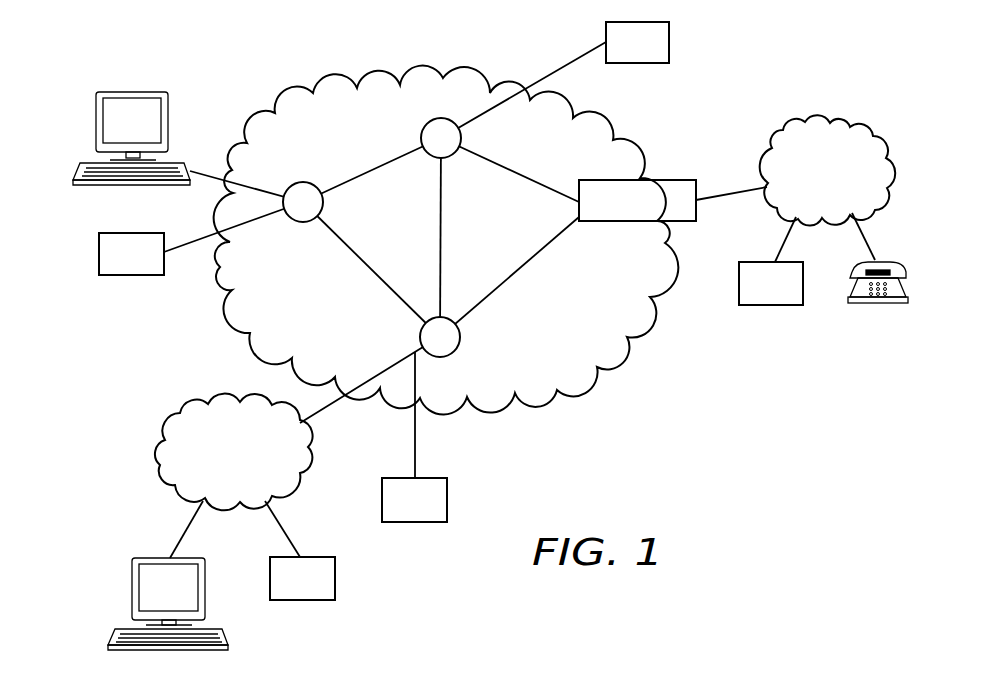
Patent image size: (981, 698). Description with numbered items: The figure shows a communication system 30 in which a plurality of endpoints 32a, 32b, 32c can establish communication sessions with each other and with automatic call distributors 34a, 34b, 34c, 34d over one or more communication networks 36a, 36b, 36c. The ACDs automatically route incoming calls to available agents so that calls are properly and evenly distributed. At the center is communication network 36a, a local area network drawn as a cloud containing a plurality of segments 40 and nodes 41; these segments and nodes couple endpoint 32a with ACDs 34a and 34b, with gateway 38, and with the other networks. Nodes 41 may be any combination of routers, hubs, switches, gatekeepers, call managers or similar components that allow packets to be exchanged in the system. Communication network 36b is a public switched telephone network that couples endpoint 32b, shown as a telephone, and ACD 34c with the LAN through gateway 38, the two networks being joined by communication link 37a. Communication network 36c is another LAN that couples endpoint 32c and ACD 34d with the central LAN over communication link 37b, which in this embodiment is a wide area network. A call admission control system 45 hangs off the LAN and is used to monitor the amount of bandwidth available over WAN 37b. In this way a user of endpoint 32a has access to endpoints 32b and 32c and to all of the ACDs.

The communication system 30 is at (634, 432).
The endpoint 32a is at (96, 122).
The endpoint 32b is at (878, 303).
The endpoint 32c is at (132, 592).
The automatic call distributor 34a is at (99, 248).
The automatic call distributor 34b is at (669, 36).
The automatic call distributor 34c is at (770, 305).
The automatic call distributor 34d is at (335, 578).
The communication network 36a is at (320, 325).
The communication network 36b is at (851, 128).
The communication network 36c is at (162, 449).
The communication link 37a is at (732, 191).
The communication link 37b is at (331, 401).
The gateway 38 is at (619, 222).
The segments 40 is at (229, 180).
The nodes 41 is at (303, 182).
The call admission control system 45 is at (447, 497).